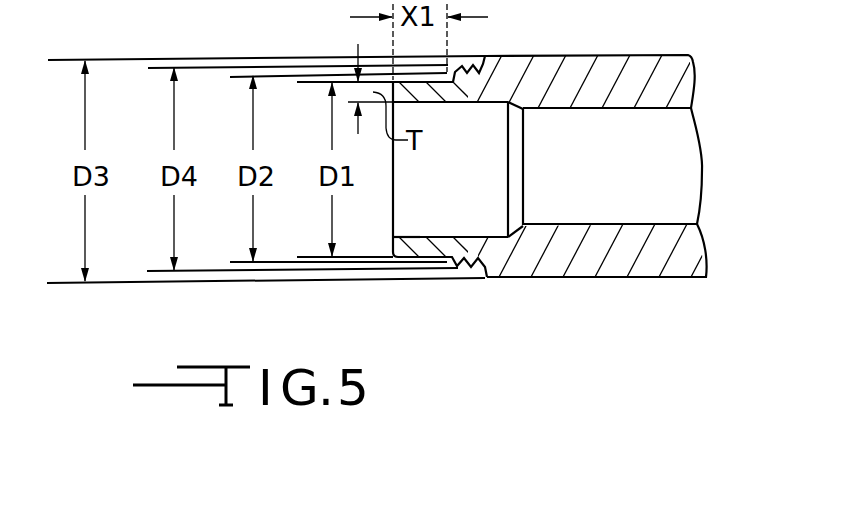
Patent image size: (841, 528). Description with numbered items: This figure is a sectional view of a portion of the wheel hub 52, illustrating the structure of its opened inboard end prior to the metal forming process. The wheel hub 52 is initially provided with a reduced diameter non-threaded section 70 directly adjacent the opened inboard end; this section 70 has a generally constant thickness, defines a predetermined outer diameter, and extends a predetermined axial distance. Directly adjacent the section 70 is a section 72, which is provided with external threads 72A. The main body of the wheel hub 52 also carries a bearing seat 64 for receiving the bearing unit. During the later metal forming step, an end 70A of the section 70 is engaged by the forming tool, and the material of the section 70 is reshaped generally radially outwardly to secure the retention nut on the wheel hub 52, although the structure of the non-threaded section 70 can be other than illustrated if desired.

The wheel hub 52 is at (572, 280).
The bearing seat 64 is at (587, 55).
The reduced diameter non-threaded section 70 is at (406, 252).
The end of section 70A is at (392, 247).
The section 72 is at (467, 253).
The external threads 72A is at (455, 86).